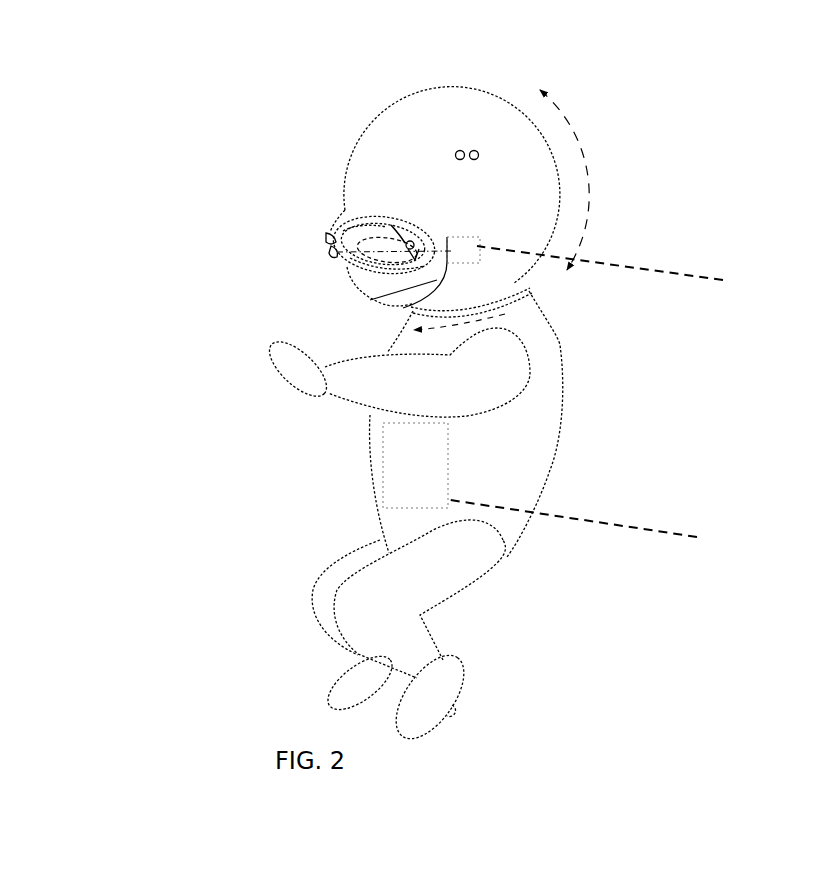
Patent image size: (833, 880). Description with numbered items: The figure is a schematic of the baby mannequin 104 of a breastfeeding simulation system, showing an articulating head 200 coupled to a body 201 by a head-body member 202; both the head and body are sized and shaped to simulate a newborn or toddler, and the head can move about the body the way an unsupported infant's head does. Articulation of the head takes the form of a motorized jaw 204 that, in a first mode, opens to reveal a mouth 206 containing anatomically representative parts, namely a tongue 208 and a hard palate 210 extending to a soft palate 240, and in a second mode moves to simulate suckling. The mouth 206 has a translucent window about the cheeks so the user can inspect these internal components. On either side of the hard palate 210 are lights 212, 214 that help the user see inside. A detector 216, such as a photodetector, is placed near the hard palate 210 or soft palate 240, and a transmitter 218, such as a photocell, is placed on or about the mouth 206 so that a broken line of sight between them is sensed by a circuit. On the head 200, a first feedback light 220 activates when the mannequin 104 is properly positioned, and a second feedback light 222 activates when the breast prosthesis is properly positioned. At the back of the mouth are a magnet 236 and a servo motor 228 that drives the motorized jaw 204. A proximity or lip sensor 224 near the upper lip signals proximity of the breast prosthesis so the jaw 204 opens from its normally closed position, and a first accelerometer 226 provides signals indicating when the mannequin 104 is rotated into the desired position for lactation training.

The baby mannequin 104 is at (193, 67).
The articulating head 200 is at (365, 105).
The body 201 is at (370, 453).
The head-body member 202 is at (512, 302).
The motorized jaw 204 is at (418, 267).
The mouth 206 is at (317, 213).
The tongue 208 is at (360, 259).
The hard palate 210 is at (358, 221).
The light 212 is at (436, 270).
The light 214 is at (589, 305).
The detector 216 is at (391, 225).
The transmitter 218 is at (328, 223).
The first feedback light 220 is at (463, 152).
The second feedback light 222 is at (478, 153).
The proximity sensor 224 is at (332, 242).
The first accelerometer 226 is at (560, 486).
The servo motor 228 is at (621, 269).
The magnet 236 is at (414, 246).
The soft palate 240 is at (409, 241).